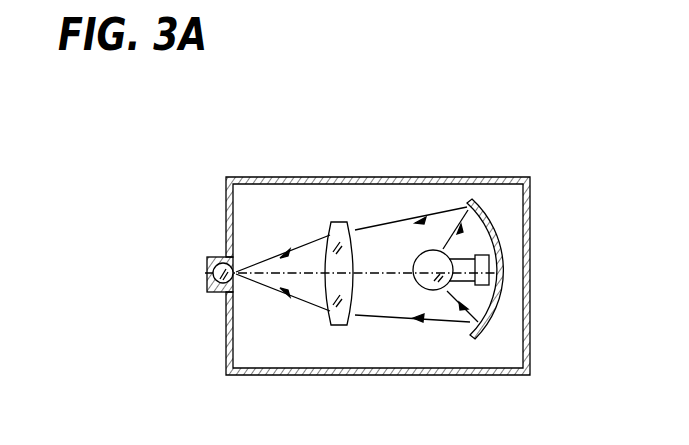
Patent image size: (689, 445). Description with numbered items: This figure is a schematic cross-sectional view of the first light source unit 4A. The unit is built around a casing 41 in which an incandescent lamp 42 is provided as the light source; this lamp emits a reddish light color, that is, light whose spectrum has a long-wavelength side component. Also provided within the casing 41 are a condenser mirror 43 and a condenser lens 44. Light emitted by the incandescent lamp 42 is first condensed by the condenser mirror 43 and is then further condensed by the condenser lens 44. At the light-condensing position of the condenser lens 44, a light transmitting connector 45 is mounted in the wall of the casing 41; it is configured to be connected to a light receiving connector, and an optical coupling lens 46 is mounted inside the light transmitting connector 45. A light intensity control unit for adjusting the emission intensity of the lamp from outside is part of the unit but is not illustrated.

The first light source unit 4A is at (481, 174).
The casing 41 is at (352, 177).
The incandescent lamp 42 is at (433, 291).
The condenser mirror 43 is at (470, 339).
The condenser lens 44 is at (333, 327).
The light transmitting connector 45 is at (220, 260).
The optical coupling lens 46 is at (220, 292).